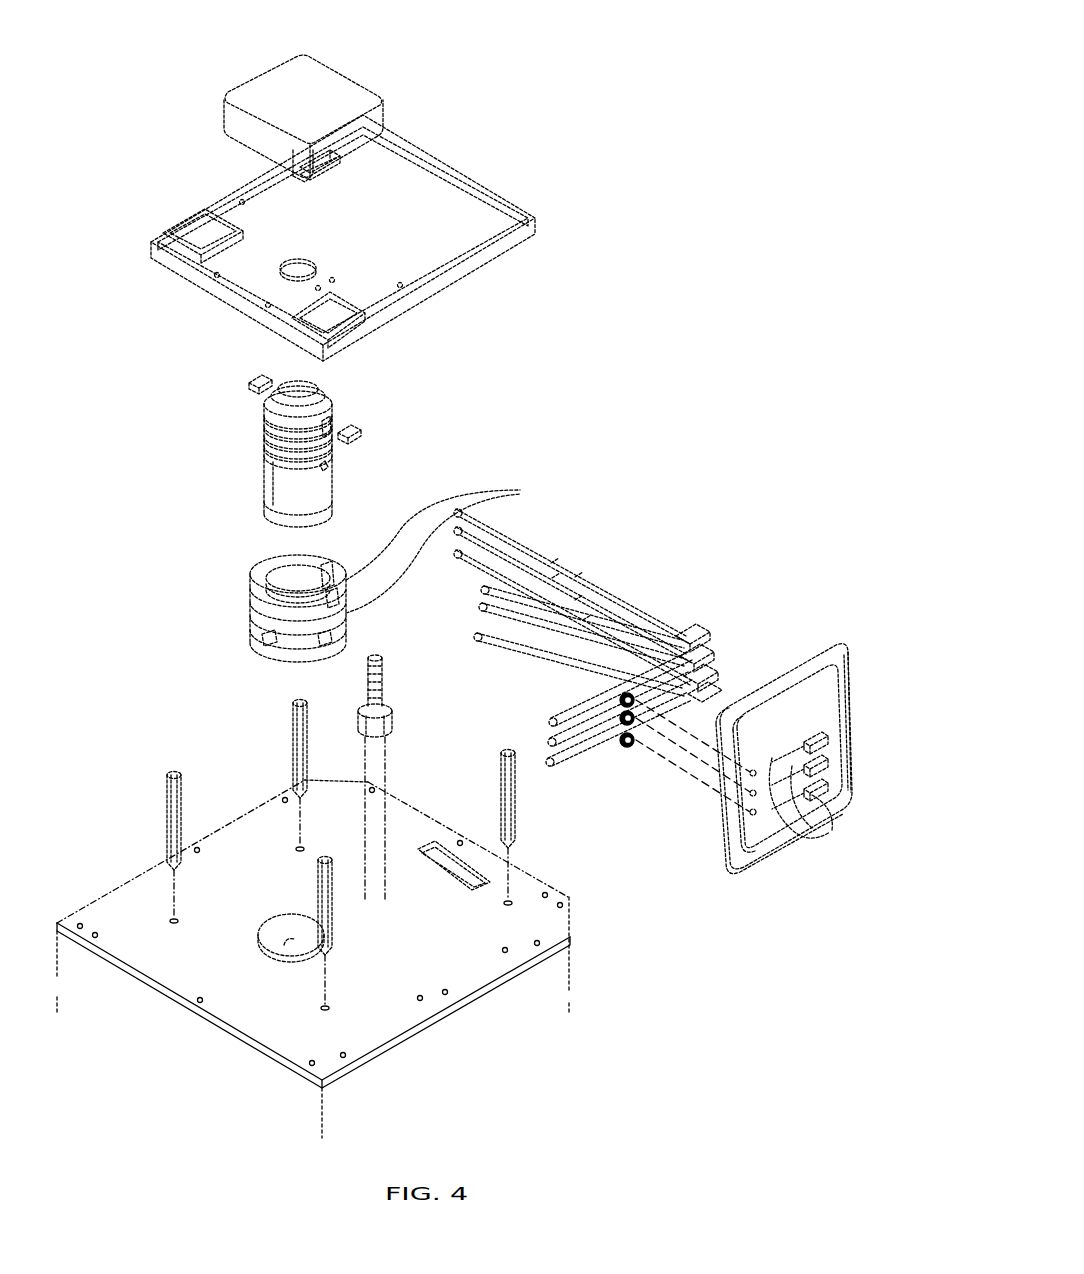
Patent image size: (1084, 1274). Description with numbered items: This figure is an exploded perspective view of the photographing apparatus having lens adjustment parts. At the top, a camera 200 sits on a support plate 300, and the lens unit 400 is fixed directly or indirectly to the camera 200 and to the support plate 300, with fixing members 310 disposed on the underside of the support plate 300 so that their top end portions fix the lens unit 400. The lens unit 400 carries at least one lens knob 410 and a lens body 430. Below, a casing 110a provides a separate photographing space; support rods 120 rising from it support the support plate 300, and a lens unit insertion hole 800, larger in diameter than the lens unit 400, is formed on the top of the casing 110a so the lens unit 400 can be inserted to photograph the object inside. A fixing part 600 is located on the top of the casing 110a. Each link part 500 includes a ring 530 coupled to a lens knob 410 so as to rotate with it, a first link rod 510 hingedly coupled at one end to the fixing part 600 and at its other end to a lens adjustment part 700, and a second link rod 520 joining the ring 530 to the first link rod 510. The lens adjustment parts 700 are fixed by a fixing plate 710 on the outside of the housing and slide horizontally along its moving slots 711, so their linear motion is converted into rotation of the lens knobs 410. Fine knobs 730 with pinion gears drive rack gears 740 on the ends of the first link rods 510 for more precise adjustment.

The camera 200 is at (328, 78).
The support plate 300 is at (508, 285).
The fixing member 310 is at (247, 379).
The lens unit 400 is at (295, 464).
The lens knob 410 is at (333, 410).
The cylinder body 430 is at (334, 488).
The lens adjustment part 700 is at (272, 448).
The link part 500 is at (687, 478).
The first link rod 510 is at (668, 645).
The second link rod 520 is at (585, 612).
The ring 530 is at (453, 545).
The rack gear 740 is at (580, 750).
The fine knob 730 is at (647, 730).
The fixing plate 710 is at (820, 690).
The moving slot 711 is at (810, 805).
The casing 110a is at (405, 1030).
The support rod 120 is at (166, 808).
The fixing part 600 is at (393, 715).
The lens unit insertion hole 800 is at (290, 945).